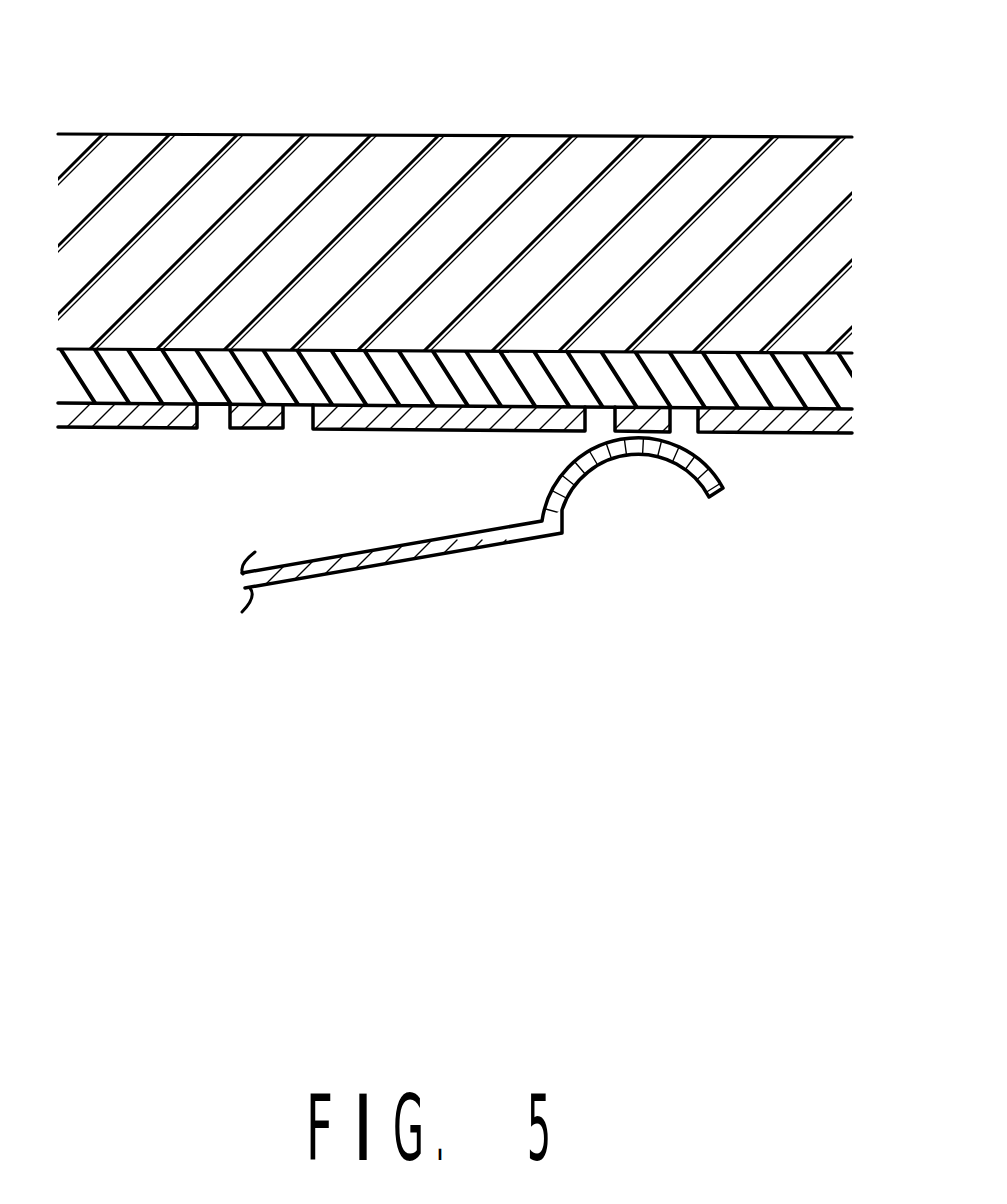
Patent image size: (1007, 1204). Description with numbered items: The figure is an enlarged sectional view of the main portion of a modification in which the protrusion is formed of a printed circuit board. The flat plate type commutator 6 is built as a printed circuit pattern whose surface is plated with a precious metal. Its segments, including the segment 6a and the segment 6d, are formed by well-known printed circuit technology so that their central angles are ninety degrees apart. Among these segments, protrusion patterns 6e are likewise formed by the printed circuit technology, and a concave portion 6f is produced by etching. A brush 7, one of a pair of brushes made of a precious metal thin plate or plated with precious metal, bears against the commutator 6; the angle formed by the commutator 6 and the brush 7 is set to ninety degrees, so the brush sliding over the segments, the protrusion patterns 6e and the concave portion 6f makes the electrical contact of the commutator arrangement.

The flat plate type commutator 6 is at (520, 393).
The segment 6a is at (405, 413).
The segment 6d is at (808, 415).
The protrusion pattern 6e is at (255, 412).
The concave portion 6f is at (213, 410).
The brush 7 is at (372, 567).